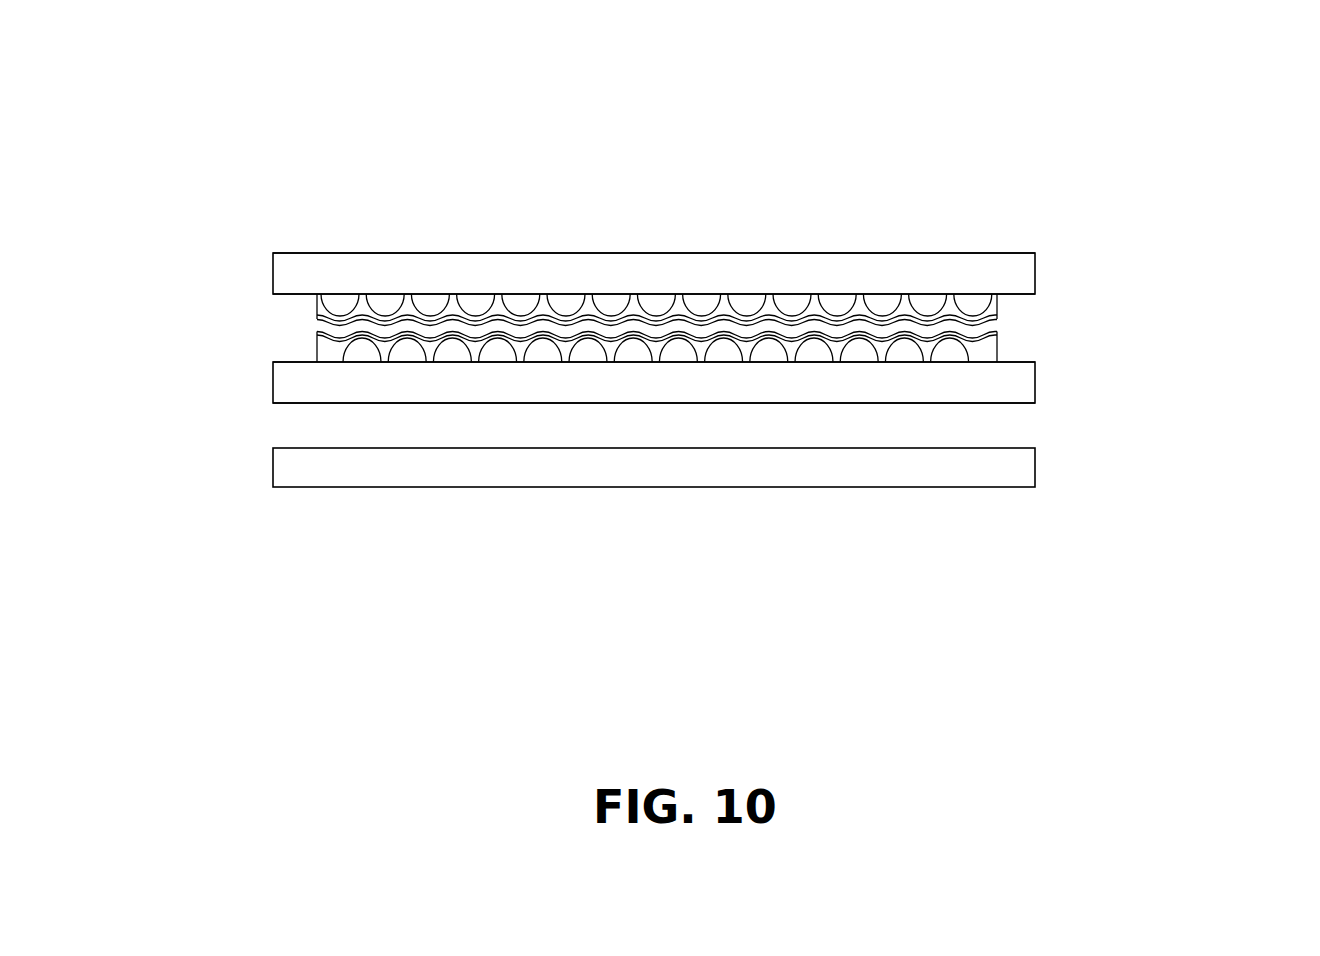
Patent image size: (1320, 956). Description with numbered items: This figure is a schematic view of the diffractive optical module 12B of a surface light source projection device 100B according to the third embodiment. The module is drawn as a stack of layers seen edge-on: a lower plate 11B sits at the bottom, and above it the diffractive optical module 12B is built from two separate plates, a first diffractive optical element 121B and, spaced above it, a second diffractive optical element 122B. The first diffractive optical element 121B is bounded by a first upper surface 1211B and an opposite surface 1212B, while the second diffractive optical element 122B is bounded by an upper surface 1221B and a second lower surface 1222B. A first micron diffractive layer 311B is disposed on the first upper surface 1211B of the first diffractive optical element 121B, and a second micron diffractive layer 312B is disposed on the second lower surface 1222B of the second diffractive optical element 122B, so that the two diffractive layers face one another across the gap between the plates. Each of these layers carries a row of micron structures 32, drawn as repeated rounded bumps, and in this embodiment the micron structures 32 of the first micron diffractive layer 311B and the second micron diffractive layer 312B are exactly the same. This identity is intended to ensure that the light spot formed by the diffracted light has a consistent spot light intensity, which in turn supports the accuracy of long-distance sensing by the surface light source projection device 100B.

The surface light source projection device 100B is at (220, 72).
The substrate 11B is at (1035, 465).
The diffractive optical module 12B is at (1215, 266).
The first diffractive optical element 121B is at (1035, 380).
The second diffractive optical element 122B is at (1035, 271).
The first upper surface 1211B is at (293, 362).
The second surface of first film layer 1212B is at (293, 405).
The first surface of second film layer 1221B is at (293, 252).
The second lower surface 1222B is at (292, 294).
The first micron diffractive layer 311B is at (997, 344).
The second micron diffractive layer 312B is at (997, 303).
The micron structures 32 is at (497, 297).